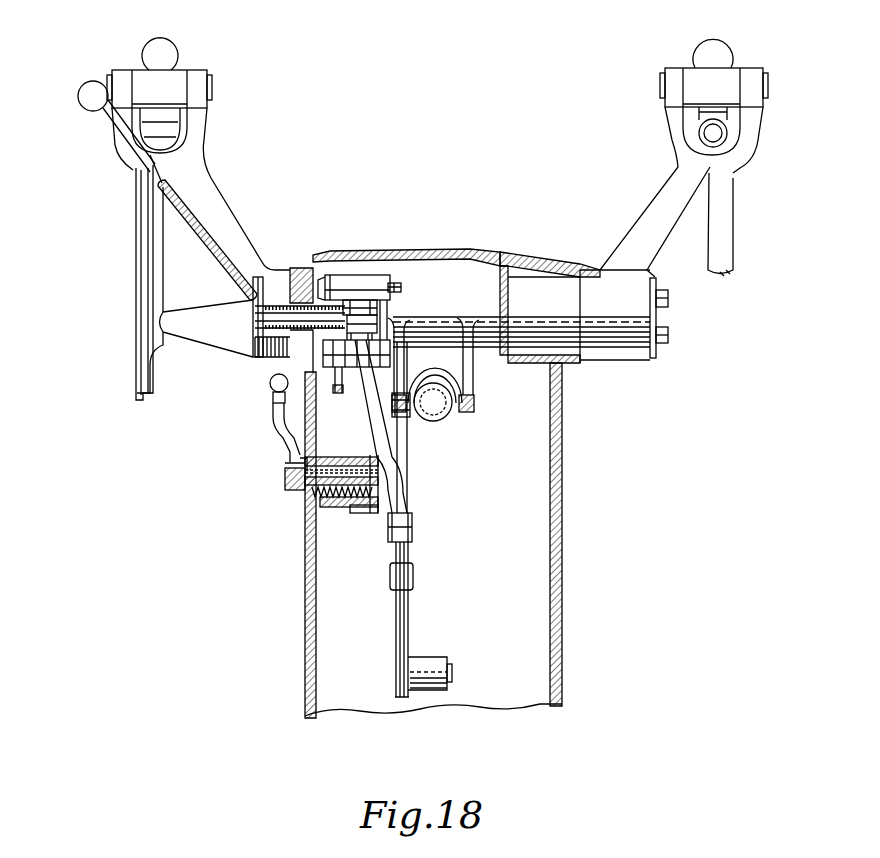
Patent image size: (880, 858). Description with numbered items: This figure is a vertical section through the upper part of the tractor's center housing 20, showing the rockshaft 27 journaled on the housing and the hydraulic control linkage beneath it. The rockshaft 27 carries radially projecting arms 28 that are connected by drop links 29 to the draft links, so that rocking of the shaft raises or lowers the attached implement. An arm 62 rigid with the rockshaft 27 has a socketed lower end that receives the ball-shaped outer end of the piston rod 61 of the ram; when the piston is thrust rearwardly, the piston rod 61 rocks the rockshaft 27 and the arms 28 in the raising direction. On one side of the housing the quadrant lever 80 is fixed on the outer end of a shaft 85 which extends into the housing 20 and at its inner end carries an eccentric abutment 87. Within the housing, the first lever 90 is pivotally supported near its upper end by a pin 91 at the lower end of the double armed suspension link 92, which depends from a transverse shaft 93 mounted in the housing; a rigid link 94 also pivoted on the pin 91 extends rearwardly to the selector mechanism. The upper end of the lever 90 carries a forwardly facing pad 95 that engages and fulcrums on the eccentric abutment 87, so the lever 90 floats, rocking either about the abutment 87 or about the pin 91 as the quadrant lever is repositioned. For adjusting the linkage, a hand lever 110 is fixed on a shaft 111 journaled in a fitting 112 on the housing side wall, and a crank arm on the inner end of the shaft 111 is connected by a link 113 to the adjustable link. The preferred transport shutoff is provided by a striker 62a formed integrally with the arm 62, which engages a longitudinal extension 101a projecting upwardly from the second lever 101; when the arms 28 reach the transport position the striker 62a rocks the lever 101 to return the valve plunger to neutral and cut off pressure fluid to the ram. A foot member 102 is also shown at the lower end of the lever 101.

The center housing 20 is at (447, 250).
The rockshaft 27 is at (545, 285).
The radially projecting arms 28 is at (212, 207).
The drop links 29 is at (717, 217).
The piston rod 61 is at (452, 416).
The arm 62 is at (465, 386).
The striker 62a is at (413, 420).
The quadrant lever 80 is at (90, 103).
The shaft 85 is at (272, 319).
The eccentric abutment 87 is at (348, 280).
The first lever 90 is at (381, 428).
The pin 91 is at (470, 330).
The suspension link 92 is at (383, 307).
The transverse shaft 93 is at (395, 284).
The rigid link 94 is at (336, 395).
The pad 95 is at (372, 321).
The second lever 101 is at (400, 620).
The longitudinal extension 101a is at (407, 443).
The foot bracket 102 is at (452, 673).
The hand lever 110 is at (273, 428).
The shaft 111 is at (302, 467).
The fitting 112 is at (342, 508).
The link 113 is at (390, 503).